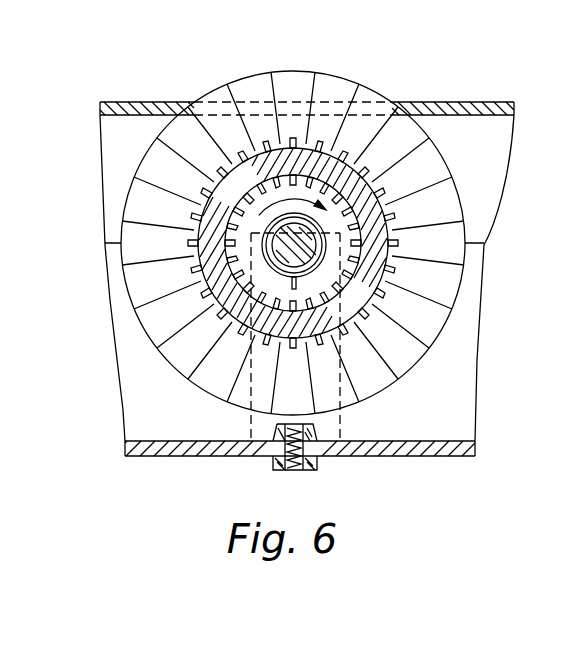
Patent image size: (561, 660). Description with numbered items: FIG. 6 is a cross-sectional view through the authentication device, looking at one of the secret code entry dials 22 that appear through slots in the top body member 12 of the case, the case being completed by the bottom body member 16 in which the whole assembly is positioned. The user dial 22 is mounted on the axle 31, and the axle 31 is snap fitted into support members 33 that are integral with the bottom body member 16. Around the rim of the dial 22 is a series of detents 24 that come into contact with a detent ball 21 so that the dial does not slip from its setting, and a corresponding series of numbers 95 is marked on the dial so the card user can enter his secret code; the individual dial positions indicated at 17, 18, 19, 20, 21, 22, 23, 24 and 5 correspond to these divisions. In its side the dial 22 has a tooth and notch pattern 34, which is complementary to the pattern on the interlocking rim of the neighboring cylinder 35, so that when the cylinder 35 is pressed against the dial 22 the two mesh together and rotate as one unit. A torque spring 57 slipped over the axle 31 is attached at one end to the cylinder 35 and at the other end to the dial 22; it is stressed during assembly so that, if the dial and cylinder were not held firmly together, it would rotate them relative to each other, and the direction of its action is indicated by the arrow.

The sector position 5 is at (443, 202).
The top body member 12 is at (110, 128).
The bottom body member 16 is at (140, 390).
The sector position 17 is at (403, 129).
The sector position 18 is at (373, 109).
The sector position 19 is at (337, 93).
The sector position 20 is at (293, 90).
The detent ball 21 is at (305, 437).
The secret code entry dial 22 is at (348, 82).
The sector position 23 is at (188, 132).
The detents 24 is at (162, 164).
The axle 31 is at (294, 251).
The support members 33 is at (345, 251).
The tooth and notch pattern 34 is at (382, 196).
The cylinder 35 is at (363, 305).
The torque spring 57 is at (328, 205).
The numbers 95 is at (320, 82).